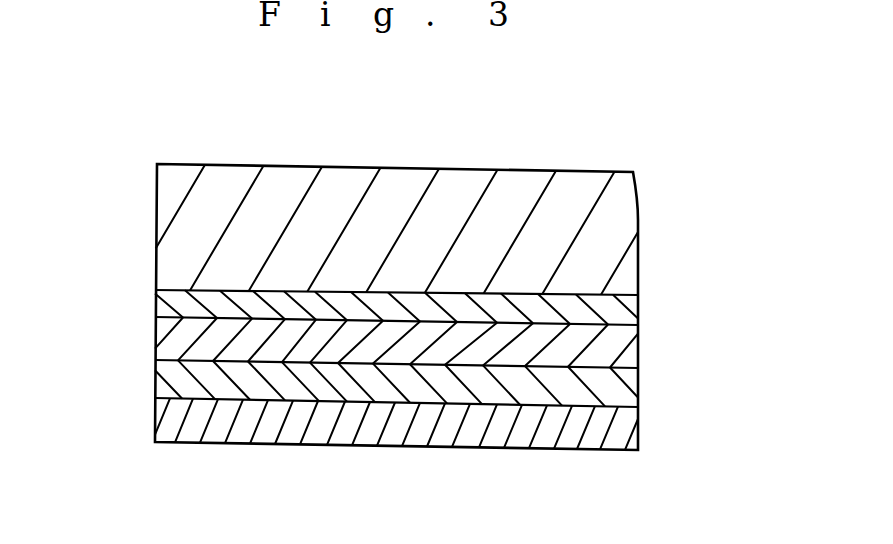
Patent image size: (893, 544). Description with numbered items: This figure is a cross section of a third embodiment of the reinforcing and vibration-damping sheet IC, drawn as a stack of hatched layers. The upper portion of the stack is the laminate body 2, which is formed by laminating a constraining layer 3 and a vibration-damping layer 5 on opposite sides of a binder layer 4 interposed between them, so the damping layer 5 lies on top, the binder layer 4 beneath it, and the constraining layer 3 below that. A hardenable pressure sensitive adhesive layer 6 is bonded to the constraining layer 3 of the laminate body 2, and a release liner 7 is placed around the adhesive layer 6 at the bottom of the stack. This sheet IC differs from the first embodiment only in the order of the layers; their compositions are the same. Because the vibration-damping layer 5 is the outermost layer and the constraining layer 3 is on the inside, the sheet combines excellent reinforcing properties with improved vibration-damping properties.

The reinforcing and vibration-damping sheet IC is at (575, 140).
The laminate body 2 is at (125, 170).
The constraining layer 3 is at (625, 352).
The binder layer 4 is at (613, 308).
The vibration-damping layer 5 is at (618, 215).
The hardenable pressure sensitive adhesive layer 6 is at (608, 385).
The release liner 7 is at (613, 420).